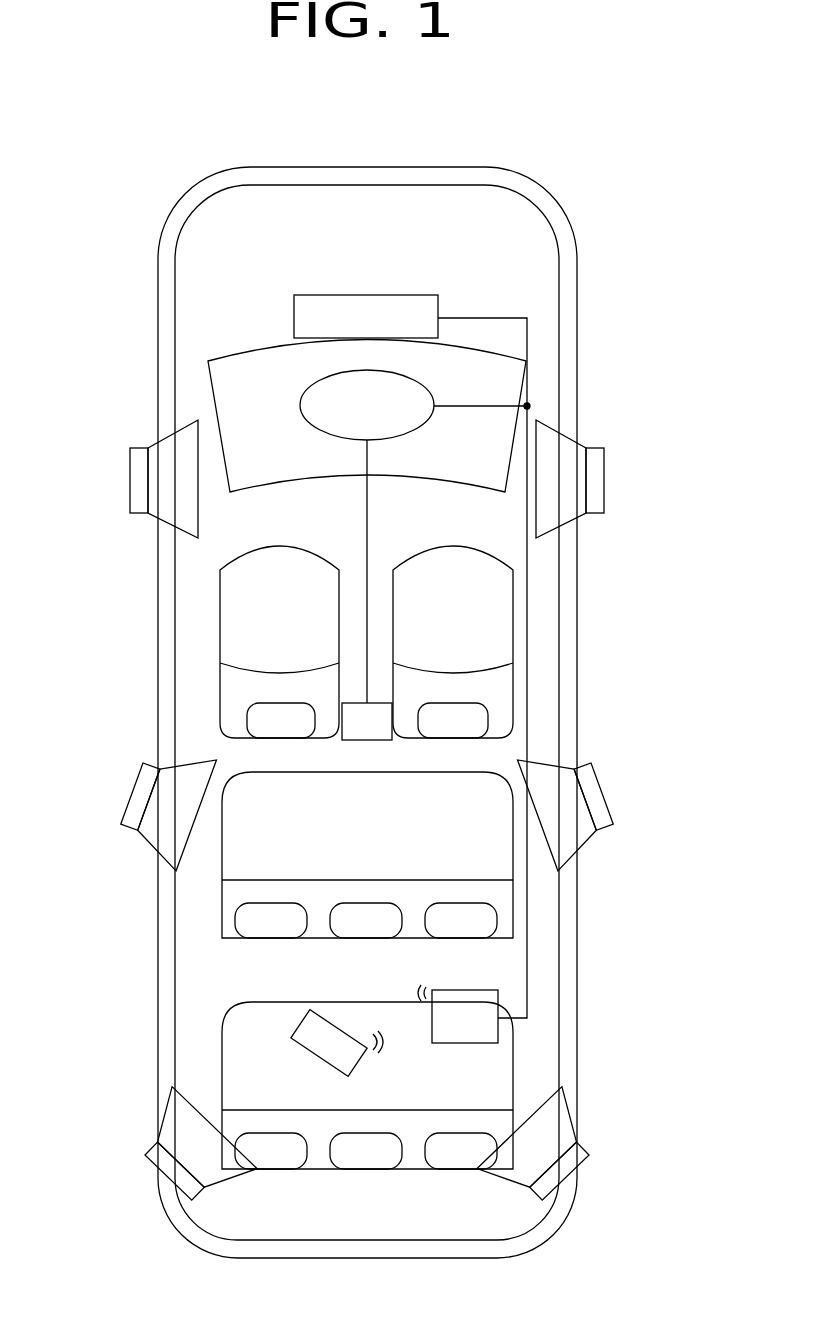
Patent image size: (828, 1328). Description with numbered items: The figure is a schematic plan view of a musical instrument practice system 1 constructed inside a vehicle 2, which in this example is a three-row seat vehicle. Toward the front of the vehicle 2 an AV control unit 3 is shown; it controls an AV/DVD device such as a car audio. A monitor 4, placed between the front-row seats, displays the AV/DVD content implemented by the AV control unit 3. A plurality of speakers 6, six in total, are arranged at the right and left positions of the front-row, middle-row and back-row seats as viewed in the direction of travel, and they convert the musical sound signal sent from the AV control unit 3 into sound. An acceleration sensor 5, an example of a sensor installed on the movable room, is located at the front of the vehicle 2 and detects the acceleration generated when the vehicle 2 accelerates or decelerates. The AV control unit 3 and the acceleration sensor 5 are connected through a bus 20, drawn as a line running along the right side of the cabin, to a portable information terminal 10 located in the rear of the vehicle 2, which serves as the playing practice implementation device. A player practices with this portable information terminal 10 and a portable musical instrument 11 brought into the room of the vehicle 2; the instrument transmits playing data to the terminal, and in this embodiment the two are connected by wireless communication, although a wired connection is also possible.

The musical instrument practice system 1 is at (522, 141).
The vehicle 2 is at (562, 220).
The AV control unit 3 is at (418, 376).
The monitor 4 is at (367, 742).
The acceleration sensor 5 is at (366, 295).
The speakers 6 is at (128, 478).
The portable information terminal 10 is at (490, 1005).
The portable musical instrument 11 is at (317, 1032).
The bus 20 is at (530, 555).